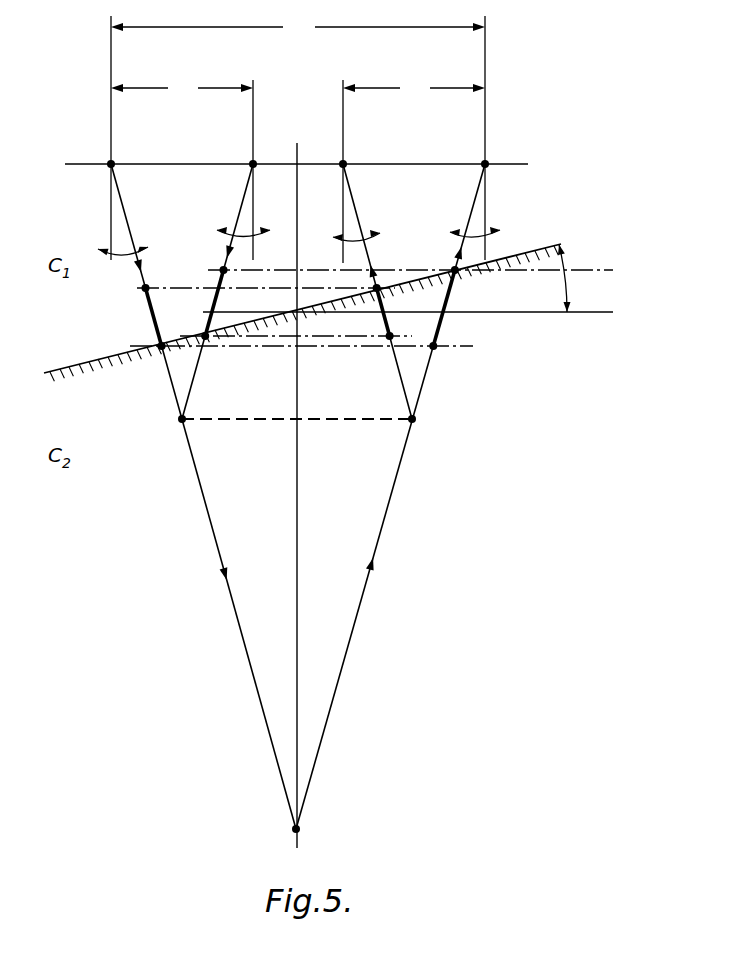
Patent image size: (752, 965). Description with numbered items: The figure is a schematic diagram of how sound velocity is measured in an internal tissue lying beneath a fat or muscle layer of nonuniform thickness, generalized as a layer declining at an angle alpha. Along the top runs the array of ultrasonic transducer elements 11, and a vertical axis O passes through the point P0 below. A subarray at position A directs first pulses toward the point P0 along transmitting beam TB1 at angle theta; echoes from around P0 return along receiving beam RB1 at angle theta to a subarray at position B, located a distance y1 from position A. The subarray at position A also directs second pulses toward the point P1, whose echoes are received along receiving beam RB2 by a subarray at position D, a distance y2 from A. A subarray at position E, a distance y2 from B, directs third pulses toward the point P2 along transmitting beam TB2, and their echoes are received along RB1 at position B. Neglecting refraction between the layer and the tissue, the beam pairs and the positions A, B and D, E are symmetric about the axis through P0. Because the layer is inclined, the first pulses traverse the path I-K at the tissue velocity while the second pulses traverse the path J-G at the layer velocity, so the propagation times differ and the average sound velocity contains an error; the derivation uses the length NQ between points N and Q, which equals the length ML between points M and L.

The array of ultrasonic transducer elements 11 is at (96, 181).
The optical axis / center line O is at (304, 157).
The position A is at (103, 153).
The position B is at (493, 153).
The position D is at (260, 153).
The position E is at (350, 153).
The point G is at (217, 261).
The point I is at (437, 359).
The point J is at (208, 346).
The point K is at (451, 260).
The point L is at (385, 348).
The point M is at (378, 278).
The point N is at (152, 279).
The point Q is at (157, 355).
The point Po P0 is at (308, 837).
The point P1 is at (169, 422).
The point P2 is at (425, 422).
The distance y1 is at (298, 28).
The distance y2 is at (298, 89).